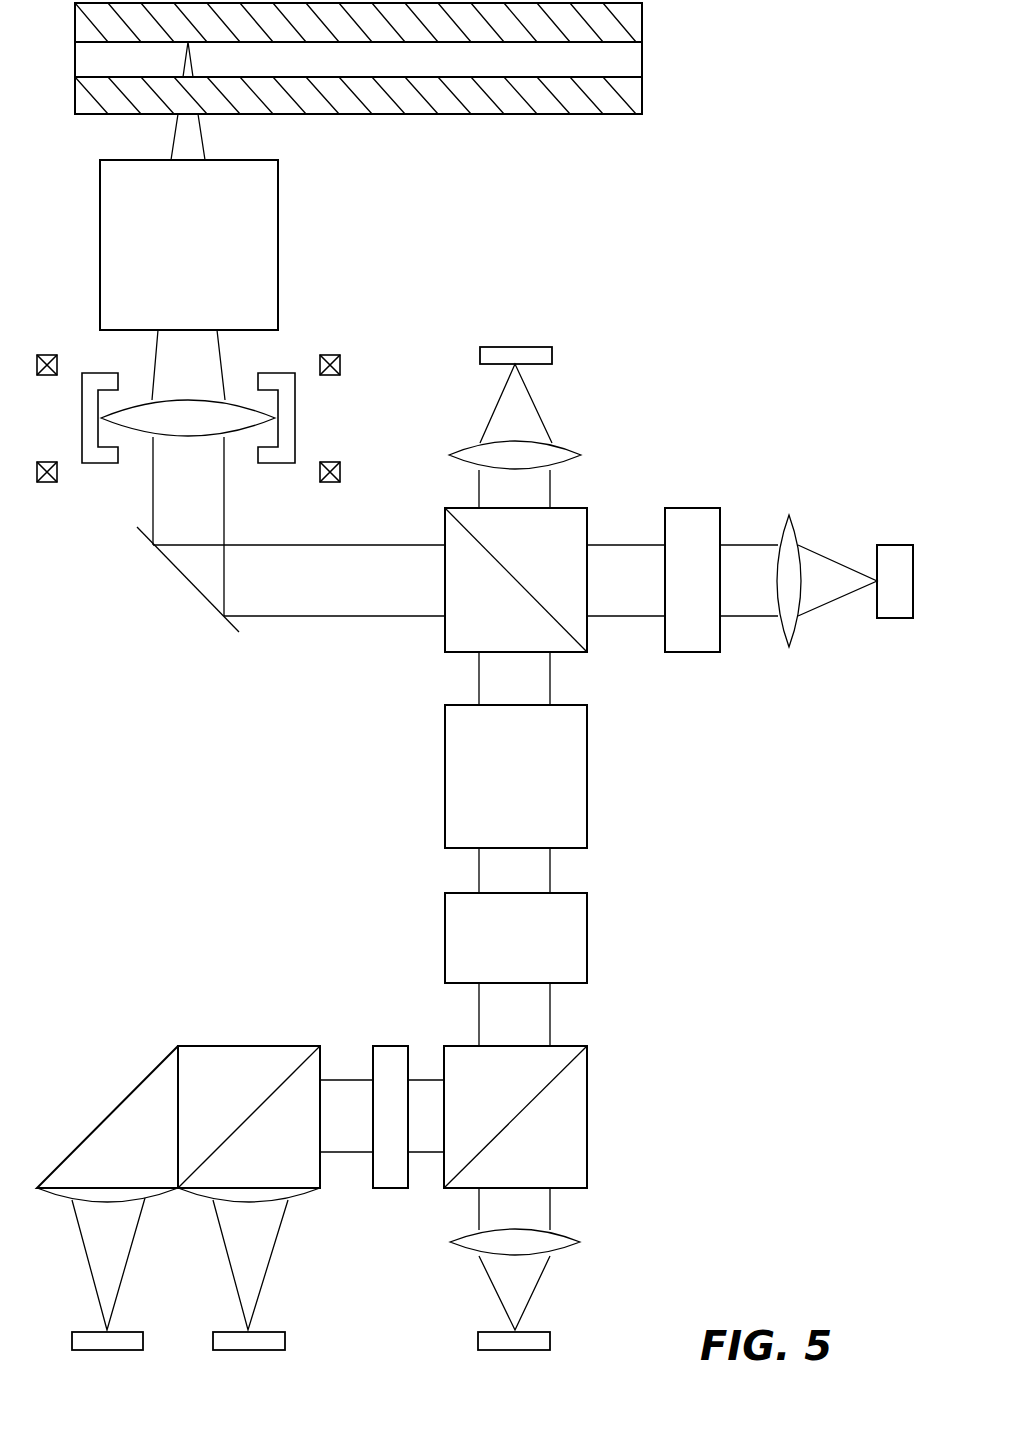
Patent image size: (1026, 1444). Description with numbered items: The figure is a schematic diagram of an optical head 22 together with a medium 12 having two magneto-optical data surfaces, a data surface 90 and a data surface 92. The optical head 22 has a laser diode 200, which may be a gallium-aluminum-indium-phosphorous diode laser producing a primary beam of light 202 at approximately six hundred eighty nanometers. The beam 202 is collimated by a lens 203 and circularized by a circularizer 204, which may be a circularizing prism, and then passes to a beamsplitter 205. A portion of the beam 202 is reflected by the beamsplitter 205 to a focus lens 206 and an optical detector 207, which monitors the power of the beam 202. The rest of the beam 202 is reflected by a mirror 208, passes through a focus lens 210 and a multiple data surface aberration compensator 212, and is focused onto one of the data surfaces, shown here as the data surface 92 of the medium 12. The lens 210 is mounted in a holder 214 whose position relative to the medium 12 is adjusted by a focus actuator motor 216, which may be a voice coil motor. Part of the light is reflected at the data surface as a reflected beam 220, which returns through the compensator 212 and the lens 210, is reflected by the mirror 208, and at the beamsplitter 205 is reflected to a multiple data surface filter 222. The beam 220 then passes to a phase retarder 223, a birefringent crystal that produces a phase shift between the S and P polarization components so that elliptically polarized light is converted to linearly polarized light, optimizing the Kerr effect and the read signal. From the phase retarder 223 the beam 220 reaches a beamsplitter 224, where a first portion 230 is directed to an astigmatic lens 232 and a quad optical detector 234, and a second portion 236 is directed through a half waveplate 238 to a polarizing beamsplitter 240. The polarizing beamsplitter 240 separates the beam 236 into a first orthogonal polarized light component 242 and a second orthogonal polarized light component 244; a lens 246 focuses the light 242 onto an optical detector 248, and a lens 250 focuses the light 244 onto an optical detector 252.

The medium 12 is at (369, 118).
The data surface 90 is at (643, 70).
The data surface 92 is at (643, 50).
The optical head 22 is at (709, 1153).
The laser diode 200 is at (893, 545).
The primary beam of light 202 is at (328, 620).
The lens 203 is at (782, 520).
The circularizer 204 is at (703, 508).
The beamsplitter 205 is at (445, 518).
The focus lens 206 is at (463, 447).
The optical detector 207 is at (494, 346).
The mirror 208 is at (203, 598).
The focus lens 210 is at (236, 447).
The multiple data surface aberration compensator 212 is at (280, 250).
The holder 214 is at (277, 373).
The focus actuator motor 216 is at (341, 366).
The reflected beam 220 is at (342, 543).
The multiple data surface filter 222 is at (590, 806).
The phase retarder 223 is at (590, 949).
The beamsplitter 224 is at (590, 1136).
The first portion 230 is at (551, 1217).
The astigmatic lens 232 is at (576, 1243).
The quad optical detector 234 is at (550, 1341).
The second portion 236 is at (426, 1080).
The half waveplate 238 is at (395, 1190).
The polarizing beamsplitter 240 is at (283, 1046).
The first orthogonal polarized light component 242 is at (270, 1262).
The second orthogonal polarized light component 244 is at (130, 1262).
The lens 246 is at (300, 1197).
The optical detector 248 is at (285, 1341).
The lens 250 is at (157, 1197).
The optical detector 252 is at (143, 1341).